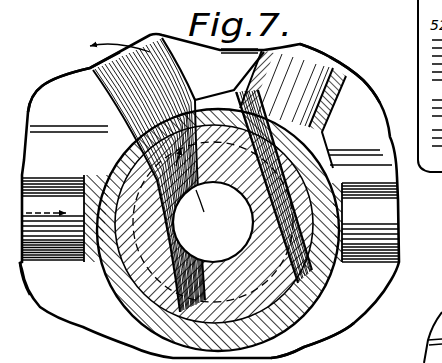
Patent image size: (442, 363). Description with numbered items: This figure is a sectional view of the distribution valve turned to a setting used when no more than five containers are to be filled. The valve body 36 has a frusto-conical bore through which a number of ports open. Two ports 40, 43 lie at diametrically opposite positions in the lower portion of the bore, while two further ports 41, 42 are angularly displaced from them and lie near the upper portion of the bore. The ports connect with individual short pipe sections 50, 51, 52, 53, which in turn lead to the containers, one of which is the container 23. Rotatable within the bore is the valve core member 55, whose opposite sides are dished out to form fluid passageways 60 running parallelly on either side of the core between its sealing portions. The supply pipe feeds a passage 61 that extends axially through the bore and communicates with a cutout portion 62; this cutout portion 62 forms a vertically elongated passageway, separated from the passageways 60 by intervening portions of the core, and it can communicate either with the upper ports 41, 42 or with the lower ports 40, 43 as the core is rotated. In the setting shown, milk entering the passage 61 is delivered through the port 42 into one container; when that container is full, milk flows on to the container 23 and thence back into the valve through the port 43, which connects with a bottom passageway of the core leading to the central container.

The container 23 is at (288, 53).
The valve body 36 is at (213, 69).
The port 40 is at (351, 266).
The port 41 is at (331, 66).
The port 42 is at (150, 55).
The port 43 is at (64, 258).
The pipe section 50 is at (367, 186).
The pipe section 51 is at (328, 110).
The pipe section 52 is at (98, 90).
The pipe section 53 is at (63, 177).
The valve core member 55 is at (304, 315).
The fluid passageways 60 is at (283, 167).
The passage 61 is at (240, 250).
The cutout portion 62 is at (160, 148).